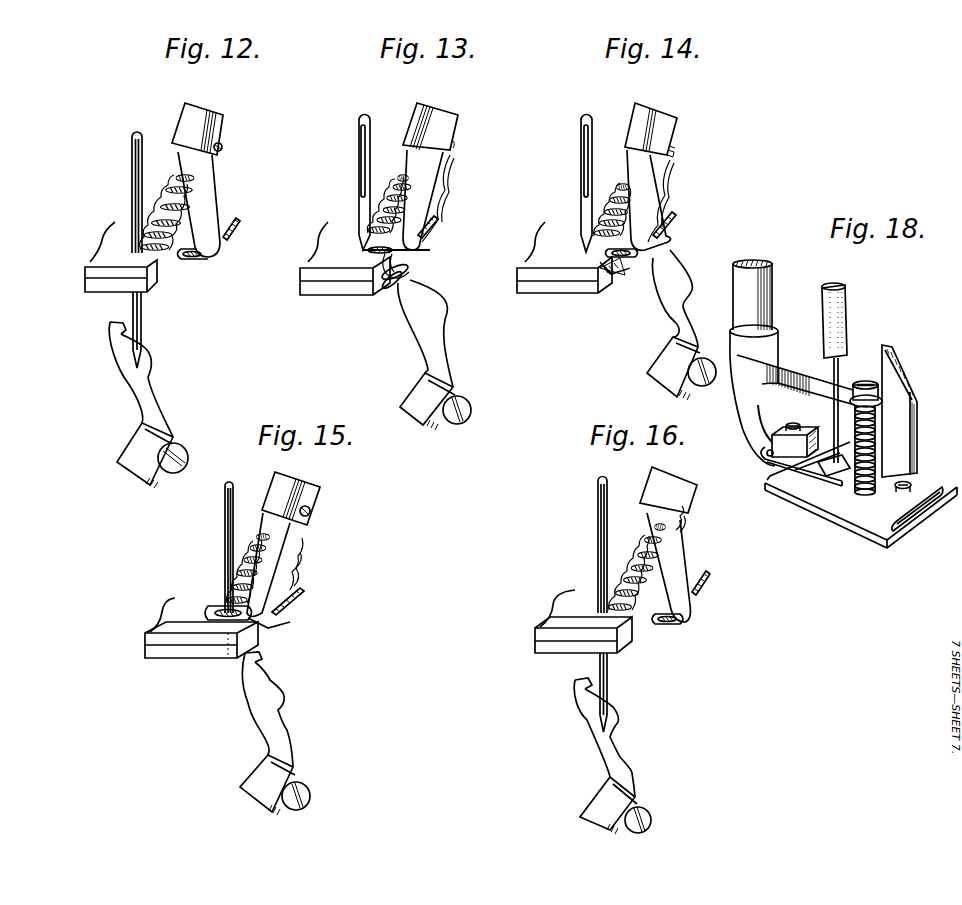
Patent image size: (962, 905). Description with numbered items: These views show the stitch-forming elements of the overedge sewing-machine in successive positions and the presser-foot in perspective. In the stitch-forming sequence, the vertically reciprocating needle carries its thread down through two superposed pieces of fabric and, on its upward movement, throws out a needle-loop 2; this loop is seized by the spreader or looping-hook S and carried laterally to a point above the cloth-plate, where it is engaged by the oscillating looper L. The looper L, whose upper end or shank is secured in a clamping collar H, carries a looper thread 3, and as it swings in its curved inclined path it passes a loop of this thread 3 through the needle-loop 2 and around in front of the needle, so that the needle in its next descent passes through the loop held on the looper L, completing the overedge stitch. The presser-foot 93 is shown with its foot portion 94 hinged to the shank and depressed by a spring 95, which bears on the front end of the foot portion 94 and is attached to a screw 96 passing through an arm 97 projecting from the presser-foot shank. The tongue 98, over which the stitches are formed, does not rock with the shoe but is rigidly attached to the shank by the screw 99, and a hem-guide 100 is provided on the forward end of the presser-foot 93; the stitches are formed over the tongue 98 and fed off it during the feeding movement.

In FIG. 12, the looper head block H is at (225, 121).
In FIG. 13, the looper head block H is at (450, 124).
In FIG. 14, the looper head block H is at (673, 130).
In FIG. 15, the looper head block H is at (312, 498).
In FIG. 16, the looper head block H is at (700, 490).
In FIG. 12, the looper L is at (207, 208).
In FIG. 13, the looper L is at (408, 193).
In FIG. 14, the looper L is at (633, 202).
In FIG. 15, the looper L is at (273, 545).
In FIG. 16, the looper L is at (667, 557).
In FIG. 12, the looper thread 3 is at (228, 233).
In FIG. 13, the looper thread 3 is at (420, 230).
In FIG. 14, the looper thread 3 is at (660, 233).
In FIG. 15, the looper thread 3 is at (303, 598).
In FIG. 16, the looper thread 3 is at (703, 590).
In FIG. 12, the needle-loop 2 is at (158, 270).
In FIG. 13, the needle-loop 2 is at (390, 287).
In FIG. 14, the needle-loop 2 is at (623, 270).
In FIG. 15, the needle-loop 2 is at (201, 628).
In FIG. 16, the needle-loop 2 is at (583, 621).
In FIG. 12, the spreader or looping-hook S is at (145, 390).
In FIG. 13, the spreader or looping-hook S is at (438, 347).
In FIG. 14, the spreader or looping-hook S is at (680, 320).
In FIG. 15, the spreader or looping-hook S is at (275, 710).
In FIG. 16, the spreader or looping-hook S is at (595, 718).
In FIG. 18, the presser-foot 93 is at (728, 347).
In FIG. 18, the foot portion 94 is at (762, 483).
In FIG. 18, the spring 95 is at (870, 487).
In FIG. 18, the screw 96 is at (867, 387).
In FIG. 18, the arm 97 is at (770, 382).
In FIG. 18, the tongue 98 is at (799, 429).
In FIG. 18, the screw 99 is at (772, 438).
In FIG. 18, the hem-guide 100 is at (913, 487).